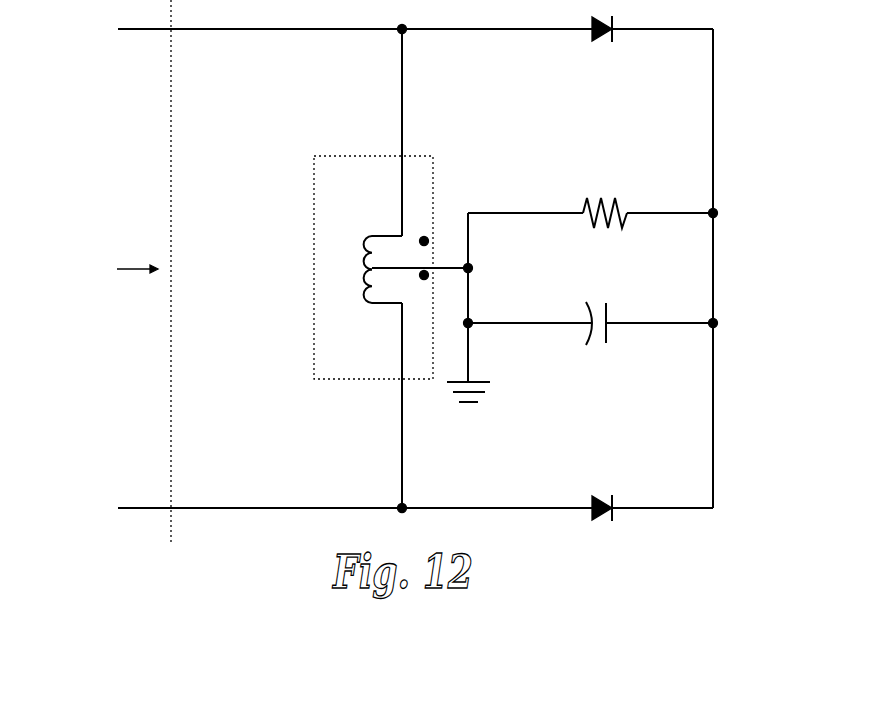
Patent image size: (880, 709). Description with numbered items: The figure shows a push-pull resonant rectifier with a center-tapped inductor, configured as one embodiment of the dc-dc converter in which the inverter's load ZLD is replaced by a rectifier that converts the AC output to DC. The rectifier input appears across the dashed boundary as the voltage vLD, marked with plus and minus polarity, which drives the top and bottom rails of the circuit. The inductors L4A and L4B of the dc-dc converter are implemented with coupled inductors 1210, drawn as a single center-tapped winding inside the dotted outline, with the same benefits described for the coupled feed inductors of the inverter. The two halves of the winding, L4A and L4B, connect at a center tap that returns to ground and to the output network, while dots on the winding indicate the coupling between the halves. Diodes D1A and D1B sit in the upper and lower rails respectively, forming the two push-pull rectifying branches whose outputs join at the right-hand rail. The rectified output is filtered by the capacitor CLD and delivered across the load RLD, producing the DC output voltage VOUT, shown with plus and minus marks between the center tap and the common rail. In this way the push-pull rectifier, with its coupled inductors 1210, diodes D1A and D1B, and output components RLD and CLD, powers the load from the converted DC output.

The coupled inductors 1210 is at (344, 288).
The first rectifier diode D1A is at (588, 46).
The second rectifier diode D1B is at (588, 485).
The inductor L4A is at (378, 232).
The inductor L4B is at (378, 303).
The load RLD is at (593, 188).
The load capacitor CLD is at (593, 343).
The output voltage VOUT is at (599, 270).
The load ZLD is at (105, 264).
The load voltage v_LD(t) vLD is at (225, 269).